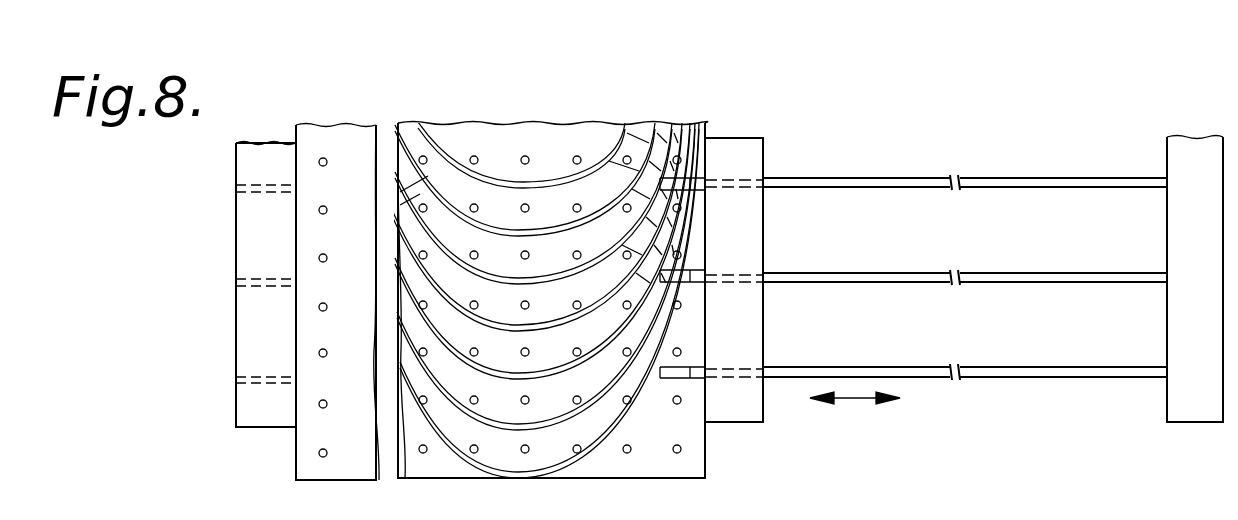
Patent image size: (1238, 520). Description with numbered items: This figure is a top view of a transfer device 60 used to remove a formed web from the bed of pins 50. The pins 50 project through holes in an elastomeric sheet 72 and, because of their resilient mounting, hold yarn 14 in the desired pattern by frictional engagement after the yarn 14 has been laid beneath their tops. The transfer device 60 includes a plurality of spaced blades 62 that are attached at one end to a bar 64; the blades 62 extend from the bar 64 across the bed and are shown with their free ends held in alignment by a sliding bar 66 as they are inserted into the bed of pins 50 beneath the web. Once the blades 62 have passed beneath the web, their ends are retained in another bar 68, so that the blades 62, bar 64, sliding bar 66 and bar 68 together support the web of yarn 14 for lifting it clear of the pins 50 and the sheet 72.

The yarn 14 is at (548, 168).
The pins 50 is at (473, 406).
The transfer device 60 is at (1097, 383).
The blades 62 is at (1063, 272).
The bar 64 is at (1193, 405).
The sliding bar 66 is at (745, 405).
The bar 68 is at (265, 422).
The elastomeric sheet 72 is at (308, 461).